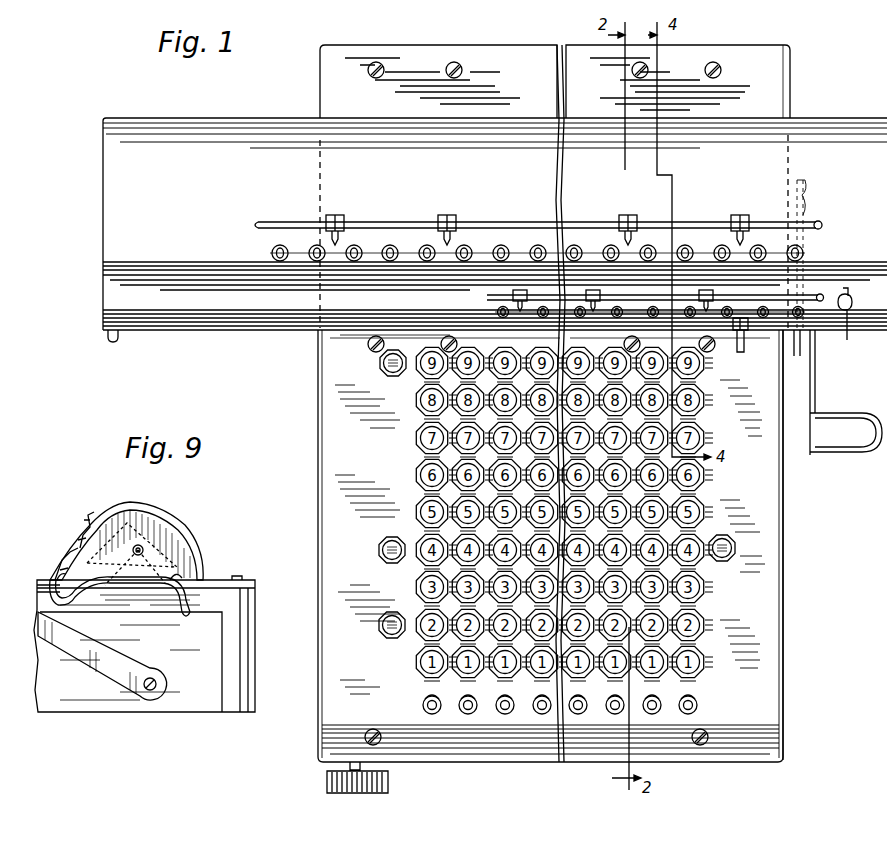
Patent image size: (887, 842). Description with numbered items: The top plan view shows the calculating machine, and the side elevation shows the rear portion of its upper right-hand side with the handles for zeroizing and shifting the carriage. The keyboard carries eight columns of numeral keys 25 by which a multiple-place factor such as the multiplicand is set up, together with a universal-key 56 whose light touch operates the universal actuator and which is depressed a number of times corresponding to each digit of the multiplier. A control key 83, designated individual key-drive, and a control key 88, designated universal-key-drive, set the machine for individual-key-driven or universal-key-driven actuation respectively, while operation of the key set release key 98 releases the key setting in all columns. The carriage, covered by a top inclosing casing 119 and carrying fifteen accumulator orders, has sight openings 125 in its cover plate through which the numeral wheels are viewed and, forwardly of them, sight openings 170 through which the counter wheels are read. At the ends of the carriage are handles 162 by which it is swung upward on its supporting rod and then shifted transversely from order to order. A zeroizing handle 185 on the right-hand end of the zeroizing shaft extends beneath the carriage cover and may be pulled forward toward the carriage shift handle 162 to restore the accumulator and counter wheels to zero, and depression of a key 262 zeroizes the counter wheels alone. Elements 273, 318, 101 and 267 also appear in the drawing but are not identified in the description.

In FIG. 1, the sight openings 125 is at (801, 247).
In FIG. 1, the carriage shift handle 162 is at (118, 340).
In FIG. 9, the carriage shift handle 162 is at (37, 608).
In FIG. 1, the key 262 is at (847, 340).
In FIG. 9, the key 262 is at (83, 512).
In FIG. 1, the key 273 is at (380, 361).
In FIG. 9, the key 273 is at (40, 578).
In FIG. 1, the lever 318 is at (735, 336).
In FIG. 1, the sight openings 170 is at (797, 350).
In FIG. 1, the universal-key 56 is at (860, 450).
In FIG. 9, the universal-key 56 is at (62, 652).
In FIG. 1, the control key 83 is at (379, 550).
In FIG. 1, the key set release key 98 is at (735, 548).
In FIG. 1, the control key 88 is at (380, 628).
In FIG. 1, the numeral key 25 is at (700, 618).
In FIG. 1, the button 101 is at (712, 712).
In FIG. 1, the knob 267 is at (389, 783).
In FIG. 9, the top inclosing casing 119 is at (185, 523).
In FIG. 9, the zeroizing handle 185 is at (183, 612).